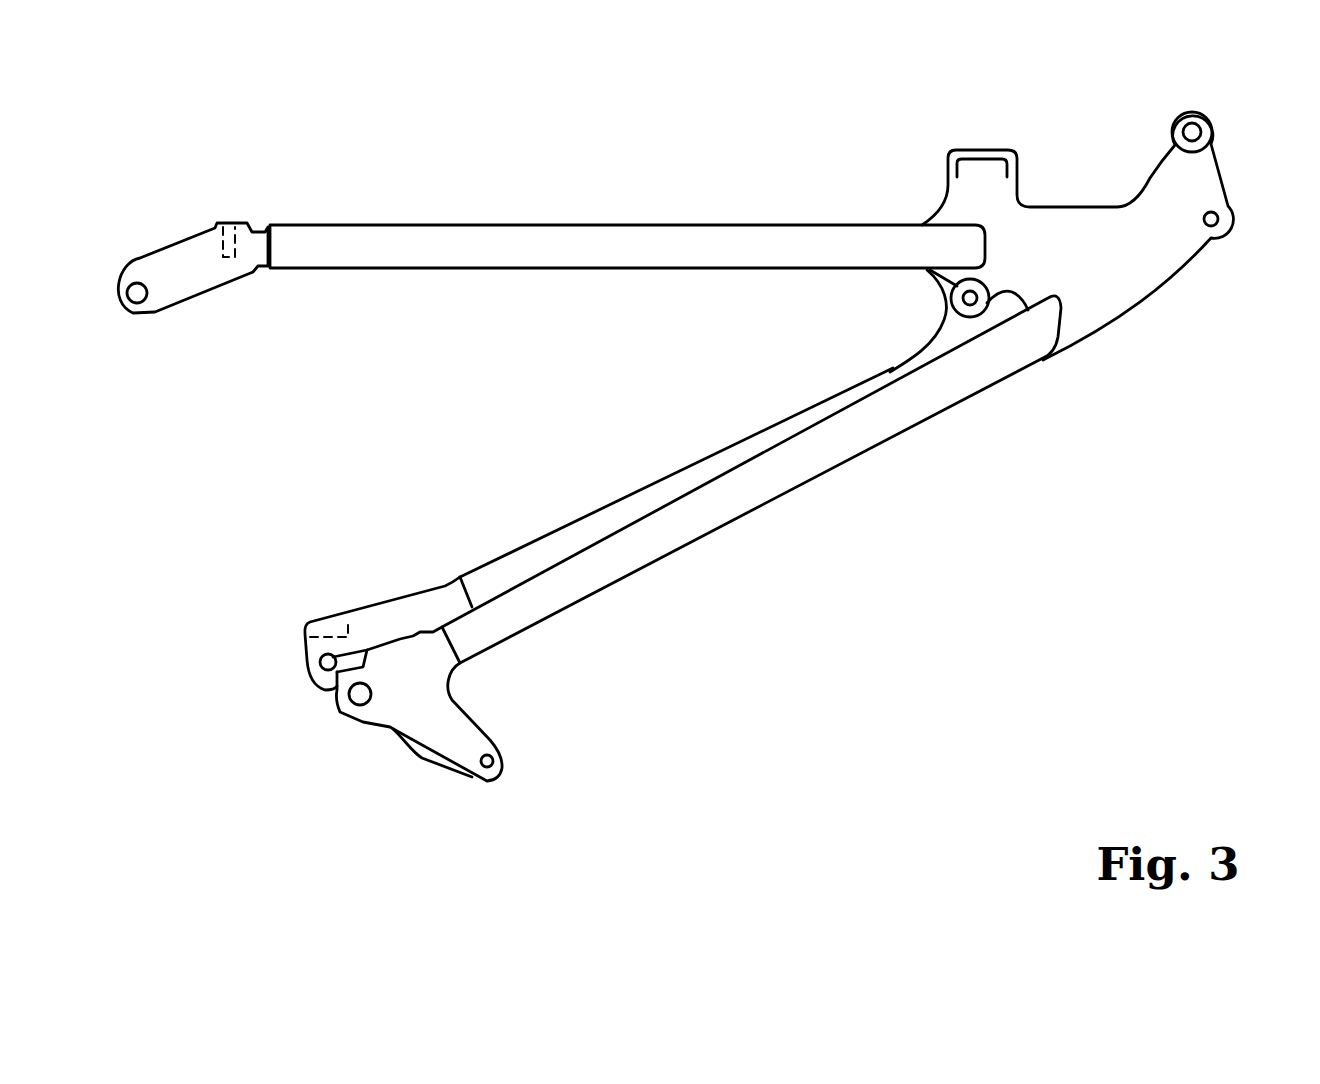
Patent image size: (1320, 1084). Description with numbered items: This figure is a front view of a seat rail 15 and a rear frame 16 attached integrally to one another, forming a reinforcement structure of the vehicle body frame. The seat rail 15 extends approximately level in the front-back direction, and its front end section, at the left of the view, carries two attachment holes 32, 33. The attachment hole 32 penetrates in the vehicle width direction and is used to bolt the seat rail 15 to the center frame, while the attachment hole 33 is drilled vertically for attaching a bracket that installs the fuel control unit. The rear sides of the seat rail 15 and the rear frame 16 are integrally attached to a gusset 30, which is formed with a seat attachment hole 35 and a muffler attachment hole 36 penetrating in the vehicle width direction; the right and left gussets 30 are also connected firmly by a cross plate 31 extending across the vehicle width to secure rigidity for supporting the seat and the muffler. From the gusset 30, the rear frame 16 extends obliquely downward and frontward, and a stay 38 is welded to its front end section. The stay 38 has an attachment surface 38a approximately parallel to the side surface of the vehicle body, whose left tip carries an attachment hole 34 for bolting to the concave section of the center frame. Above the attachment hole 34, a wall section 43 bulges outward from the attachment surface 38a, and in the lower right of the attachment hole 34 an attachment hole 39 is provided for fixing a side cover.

The seat rail 15 is at (555, 242).
The rear frame 16 is at (705, 470).
The gusset 30 is at (1160, 262).
The cross plate 31 is at (982, 148).
The attachment hole 32 is at (137, 312).
The attachment hole 33 is at (232, 224).
The attachment hole 34 is at (321, 661).
The seat attachment hole 35 is at (1198, 128).
The muffler attachment hole 36 is at (978, 304).
The stay 38 is at (438, 740).
The attachment surface 38a is at (405, 710).
The attachment hole 39 is at (495, 773).
The wall section 43 is at (348, 653).